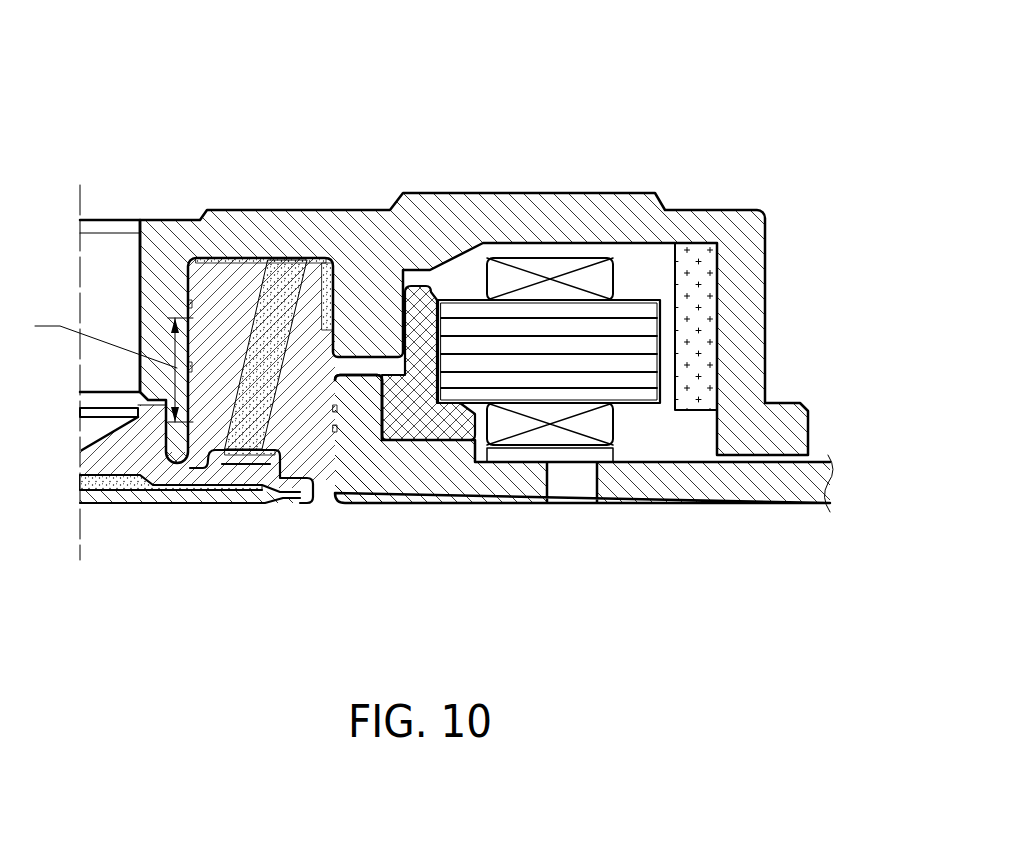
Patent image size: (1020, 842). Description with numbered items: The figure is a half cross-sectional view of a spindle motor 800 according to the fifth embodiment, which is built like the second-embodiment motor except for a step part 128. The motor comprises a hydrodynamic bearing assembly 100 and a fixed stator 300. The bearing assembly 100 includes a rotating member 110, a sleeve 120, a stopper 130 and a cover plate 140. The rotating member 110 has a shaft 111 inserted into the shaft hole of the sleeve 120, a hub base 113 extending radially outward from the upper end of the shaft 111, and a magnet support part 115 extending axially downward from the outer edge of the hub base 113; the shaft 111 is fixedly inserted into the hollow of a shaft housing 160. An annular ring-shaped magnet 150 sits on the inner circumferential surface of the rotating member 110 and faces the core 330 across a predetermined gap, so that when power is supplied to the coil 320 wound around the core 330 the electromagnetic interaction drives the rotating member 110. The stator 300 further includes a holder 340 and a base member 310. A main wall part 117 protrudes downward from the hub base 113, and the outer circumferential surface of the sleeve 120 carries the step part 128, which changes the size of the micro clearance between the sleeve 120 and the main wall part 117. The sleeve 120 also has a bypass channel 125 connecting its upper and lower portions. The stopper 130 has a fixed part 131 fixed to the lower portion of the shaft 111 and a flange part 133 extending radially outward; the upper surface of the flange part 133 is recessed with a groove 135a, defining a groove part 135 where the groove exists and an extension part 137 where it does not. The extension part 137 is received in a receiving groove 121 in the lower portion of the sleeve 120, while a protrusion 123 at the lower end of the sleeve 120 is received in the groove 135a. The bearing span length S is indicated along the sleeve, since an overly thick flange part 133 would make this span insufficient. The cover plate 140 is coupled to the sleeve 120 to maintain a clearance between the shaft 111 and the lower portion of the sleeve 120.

The spindle motor 800 is at (135, 93).
The hydrodynamic bearing assembly 100 is at (85, 628).
The rotating member 110 is at (446, 235).
The shaft 111 is at (157, 250).
The hub base 113 is at (438, 212).
The magnet support part 115 is at (747, 302).
The main wall part 117 is at (370, 313).
The step part 128 is at (398, 207).
The bypass channel 125 is at (285, 287).
The shaft housing 160 is at (177, 293).
The bearing span length S is at (114, 359).
The protrusion 123 is at (80, 413).
The groove 135a is at (147, 470).
The fixed part 131 is at (115, 453).
The flange part 133 is at (242, 590).
The groove part 135 is at (187, 472).
The extension part 137 is at (240, 460).
The cover plate 140 is at (272, 498).
The receiving groove 121 is at (280, 503).
The sleeve 120 is at (346, 497).
The stopper 130 is at (217, 627).
The stator 300 is at (633, 571).
The base member 310 is at (483, 493).
The coil 320 is at (548, 440).
The core 330 is at (592, 378).
The holder 340 is at (430, 420).
The annular ring-shaped magnet 150 is at (692, 380).